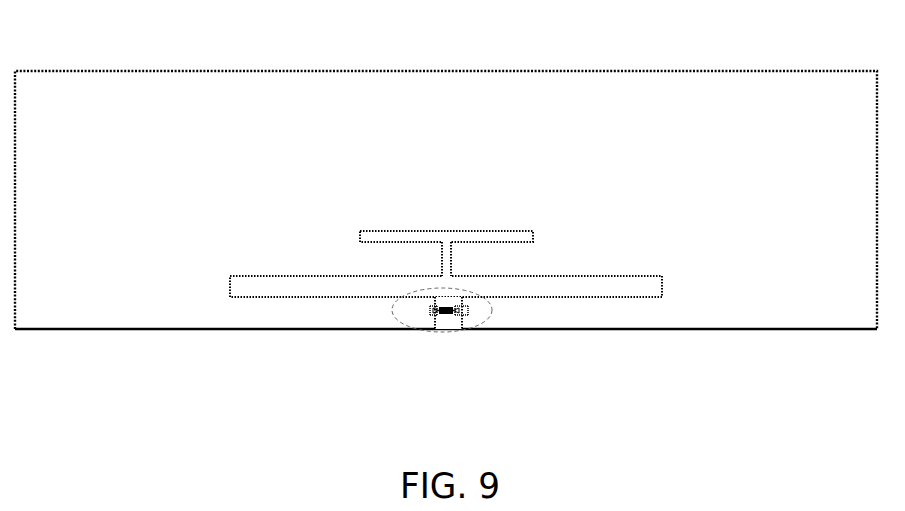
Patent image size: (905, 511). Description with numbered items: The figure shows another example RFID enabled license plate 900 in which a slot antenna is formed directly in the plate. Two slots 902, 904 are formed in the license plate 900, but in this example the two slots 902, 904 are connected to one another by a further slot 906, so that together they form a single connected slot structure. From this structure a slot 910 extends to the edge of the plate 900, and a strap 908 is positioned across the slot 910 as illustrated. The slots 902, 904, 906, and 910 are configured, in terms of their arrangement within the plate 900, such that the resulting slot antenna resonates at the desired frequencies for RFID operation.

The license plate 900 is at (636, 69).
The slot 902 is at (523, 230).
The slot 904 is at (647, 276).
The slot 906 is at (440, 265).
The strap 908 is at (491, 306).
The slot 910 is at (447, 316).